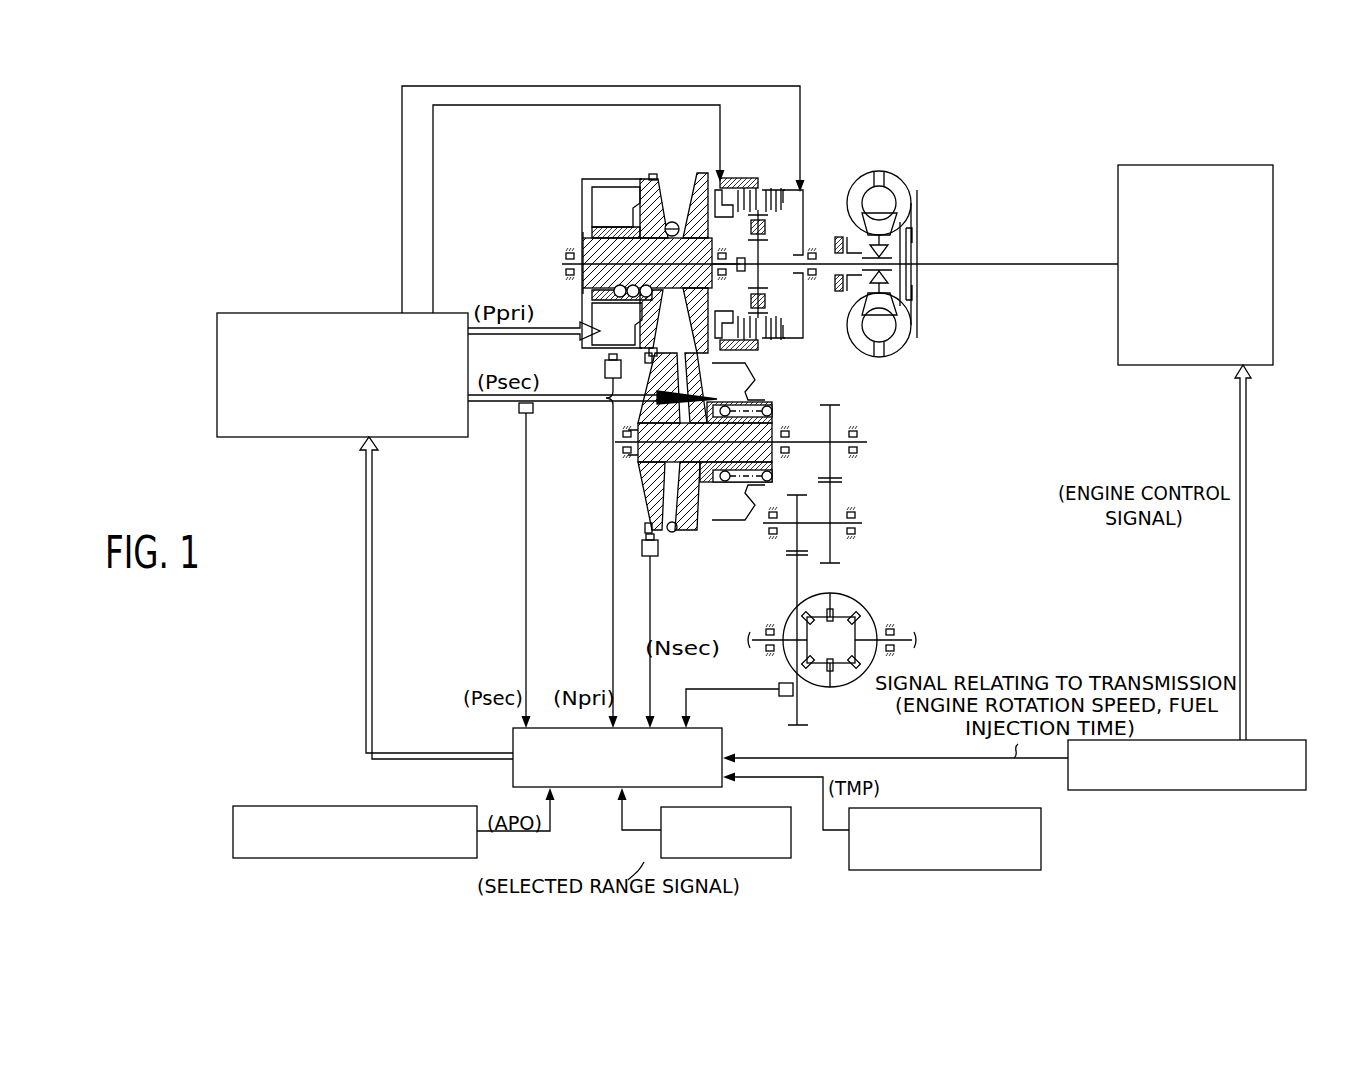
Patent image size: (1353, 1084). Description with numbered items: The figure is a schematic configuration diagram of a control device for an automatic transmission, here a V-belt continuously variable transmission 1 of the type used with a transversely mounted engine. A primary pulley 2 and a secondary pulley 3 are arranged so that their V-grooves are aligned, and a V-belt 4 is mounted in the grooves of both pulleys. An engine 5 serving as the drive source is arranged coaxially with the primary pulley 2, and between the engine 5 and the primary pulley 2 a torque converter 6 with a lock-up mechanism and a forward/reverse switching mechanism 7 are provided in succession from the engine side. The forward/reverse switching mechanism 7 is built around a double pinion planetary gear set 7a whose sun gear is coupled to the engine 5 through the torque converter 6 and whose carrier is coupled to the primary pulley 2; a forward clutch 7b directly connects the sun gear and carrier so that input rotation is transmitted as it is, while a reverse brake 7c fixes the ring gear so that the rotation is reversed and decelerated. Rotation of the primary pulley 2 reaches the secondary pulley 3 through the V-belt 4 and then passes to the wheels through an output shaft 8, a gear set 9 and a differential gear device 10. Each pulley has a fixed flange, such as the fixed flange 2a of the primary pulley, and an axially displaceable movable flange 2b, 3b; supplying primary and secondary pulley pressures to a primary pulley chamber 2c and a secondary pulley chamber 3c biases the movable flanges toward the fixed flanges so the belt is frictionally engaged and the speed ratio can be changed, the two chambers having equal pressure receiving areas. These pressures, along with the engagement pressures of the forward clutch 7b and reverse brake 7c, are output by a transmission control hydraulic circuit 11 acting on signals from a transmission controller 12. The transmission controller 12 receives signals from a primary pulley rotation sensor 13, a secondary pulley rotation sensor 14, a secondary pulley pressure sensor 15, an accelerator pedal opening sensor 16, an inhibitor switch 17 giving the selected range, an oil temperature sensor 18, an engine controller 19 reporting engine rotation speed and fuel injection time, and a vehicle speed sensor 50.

The V-belt continuously variable transmission 1 is at (592, 171).
The primary pulley 2 is at (686, 166).
The fixed flange 2a is at (702, 170).
The movable flange 2b is at (652, 178).
The primary pulley chamber 2c is at (603, 205).
The secondary pulley 3 is at (742, 545).
The movable flange 3b is at (691, 525).
The secondary pulley chamber 3c is at (710, 520).
The V-belt 4 is at (677, 222).
The engine 5 is at (1205, 165).
The torque converter 6 is at (877, 155).
The forward/reverse switching mechanism 7 is at (739, 170).
The double pinion planetary gear set 7a is at (763, 200).
The forward clutch 7b is at (768, 190).
The reverse brake 7c is at (752, 195).
The output shaft 8 is at (814, 443).
The gear set 9 is at (882, 467).
The differential gear device 10 is at (875, 577).
The transmission control hydraulic circuit 11 is at (347, 313).
The transmission controller 12 is at (512, 742).
The primary pulley rotation sensor 13 is at (607, 368).
The secondary pulley rotation sensor 14 is at (654, 560).
The secondary pulley pressure sensor 15 is at (521, 415).
The accelerator pedal opening sensor 16 is at (372, 806).
The inhibitor switch 17 is at (748, 806).
The oil temperature sensor 18 is at (1041, 858).
The engine controller 19 is at (1283, 740).
The vehicle speed sensor 50 is at (779, 695).